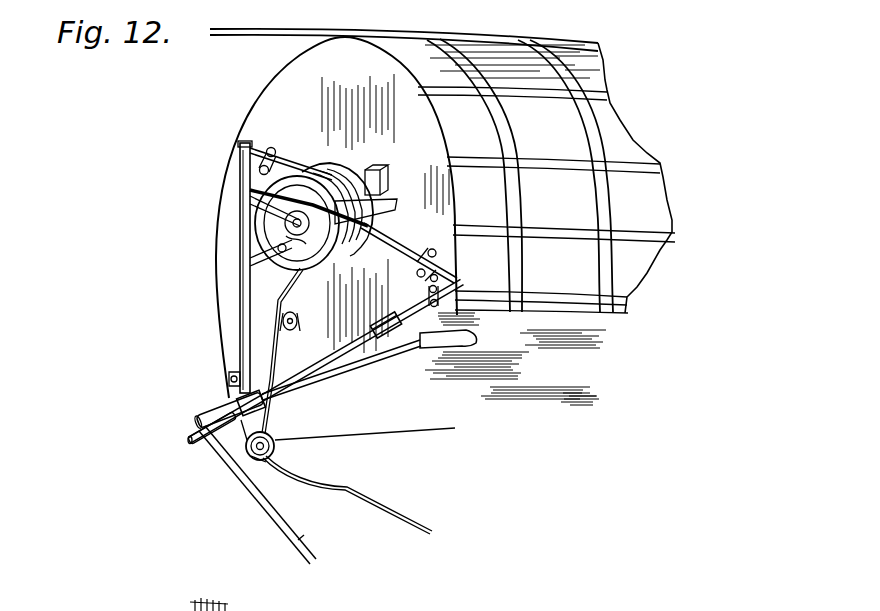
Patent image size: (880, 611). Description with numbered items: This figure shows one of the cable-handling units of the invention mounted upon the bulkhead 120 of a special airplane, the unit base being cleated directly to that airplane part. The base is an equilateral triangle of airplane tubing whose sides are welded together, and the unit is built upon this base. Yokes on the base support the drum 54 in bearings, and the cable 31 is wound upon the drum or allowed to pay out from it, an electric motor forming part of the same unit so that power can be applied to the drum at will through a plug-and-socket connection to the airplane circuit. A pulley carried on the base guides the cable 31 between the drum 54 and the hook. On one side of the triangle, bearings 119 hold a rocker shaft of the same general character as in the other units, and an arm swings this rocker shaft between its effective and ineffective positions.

The bulkhead 120 is at (276, 92).
The drum 54 is at (350, 169).
The bearings 119 is at (398, 322).
The cable 31 is at (347, 489).